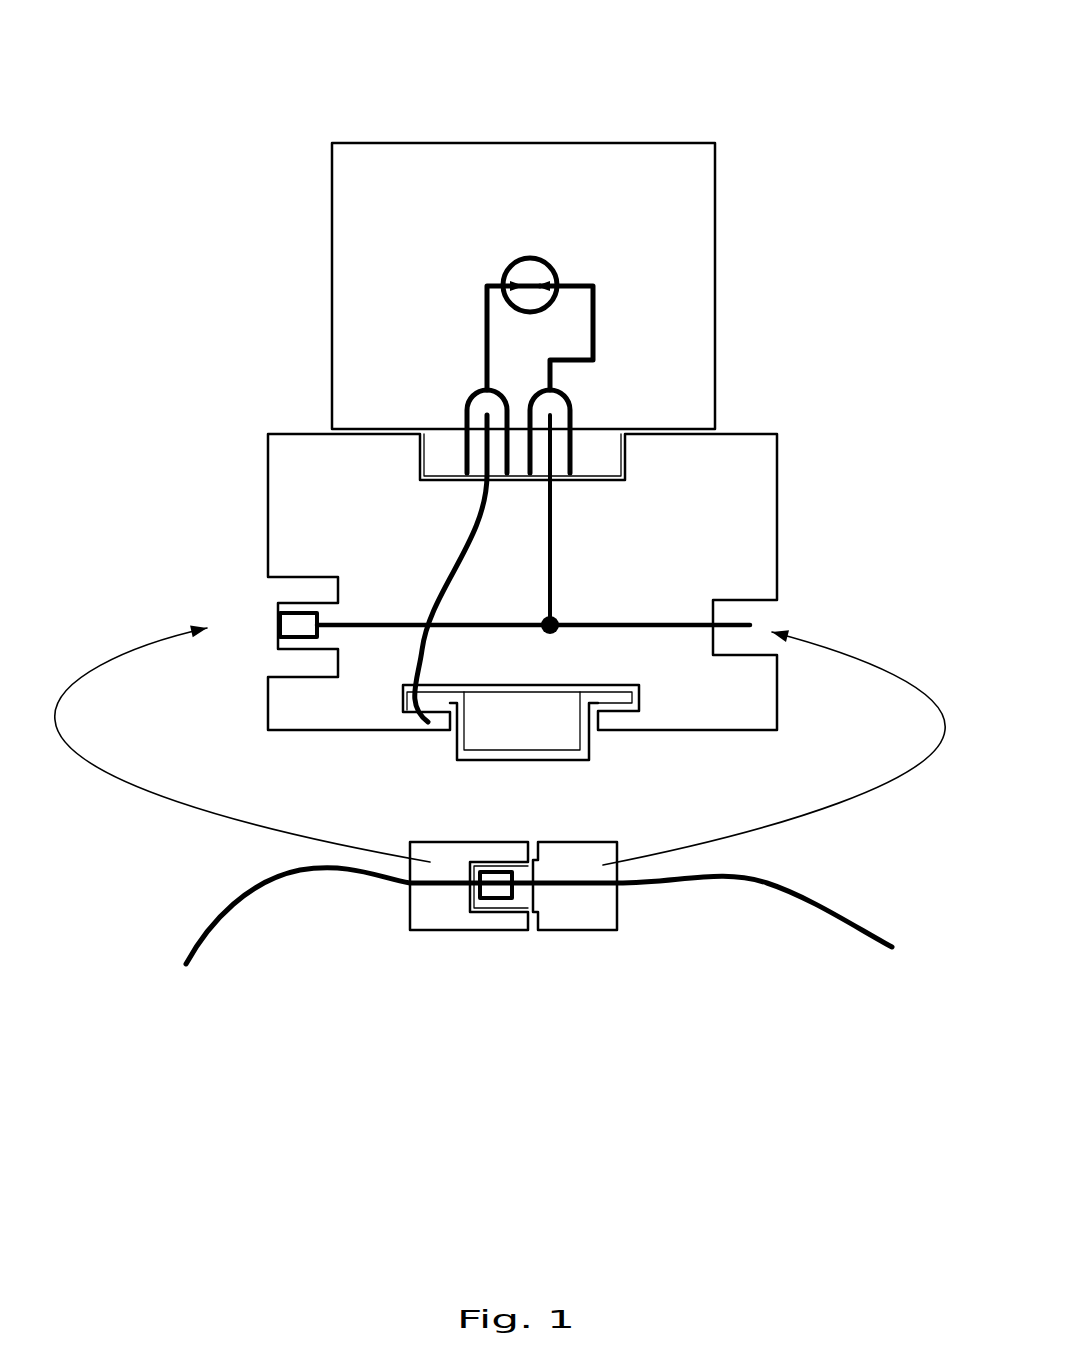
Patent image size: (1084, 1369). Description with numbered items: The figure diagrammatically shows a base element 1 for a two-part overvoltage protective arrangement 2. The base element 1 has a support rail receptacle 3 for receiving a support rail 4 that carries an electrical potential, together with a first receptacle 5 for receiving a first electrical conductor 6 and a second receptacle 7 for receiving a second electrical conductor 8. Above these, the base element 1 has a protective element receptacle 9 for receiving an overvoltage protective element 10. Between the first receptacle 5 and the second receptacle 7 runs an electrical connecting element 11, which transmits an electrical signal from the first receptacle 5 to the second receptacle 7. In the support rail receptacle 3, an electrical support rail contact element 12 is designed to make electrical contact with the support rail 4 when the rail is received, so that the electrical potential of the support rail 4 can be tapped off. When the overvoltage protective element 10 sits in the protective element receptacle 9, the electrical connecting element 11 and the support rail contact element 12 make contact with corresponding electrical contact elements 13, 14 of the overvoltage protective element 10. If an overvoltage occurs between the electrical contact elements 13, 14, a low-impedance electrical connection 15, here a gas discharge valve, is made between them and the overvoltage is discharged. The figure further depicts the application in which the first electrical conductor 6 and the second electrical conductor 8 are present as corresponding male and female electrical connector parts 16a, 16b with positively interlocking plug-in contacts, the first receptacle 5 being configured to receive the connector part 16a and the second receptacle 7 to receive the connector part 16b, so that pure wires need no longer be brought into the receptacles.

The base element 1 is at (760, 490).
The overvoltage protective arrangement 2 is at (200, 102).
The support rail receptacle 3 is at (645, 700).
The support rail 4 is at (567, 753).
The first receptacle 5 is at (262, 627).
The first electrical conductor 6 is at (415, 960).
The second receptacle 7 is at (772, 612).
The second electrical conductor 8 is at (646, 960).
The protective element receptacle 9 is at (593, 467).
The overvoltage protective element 10 is at (687, 235).
The electrical connecting element 11 is at (750, 622).
The support rail contact element 12 is at (455, 563).
The electrical contact element 13 is at (480, 333).
The electrical contact element 14 is at (595, 322).
The low-impedance electrical connection 15 is at (530, 258).
The electrical connector part 16a is at (496, 885).
The electrical connector part 16b is at (593, 915).